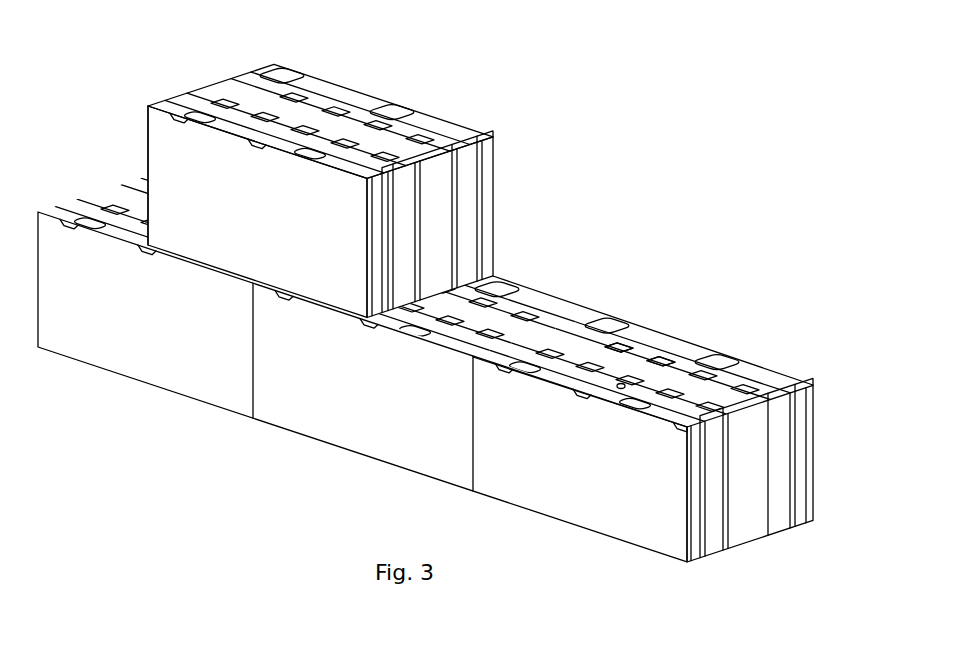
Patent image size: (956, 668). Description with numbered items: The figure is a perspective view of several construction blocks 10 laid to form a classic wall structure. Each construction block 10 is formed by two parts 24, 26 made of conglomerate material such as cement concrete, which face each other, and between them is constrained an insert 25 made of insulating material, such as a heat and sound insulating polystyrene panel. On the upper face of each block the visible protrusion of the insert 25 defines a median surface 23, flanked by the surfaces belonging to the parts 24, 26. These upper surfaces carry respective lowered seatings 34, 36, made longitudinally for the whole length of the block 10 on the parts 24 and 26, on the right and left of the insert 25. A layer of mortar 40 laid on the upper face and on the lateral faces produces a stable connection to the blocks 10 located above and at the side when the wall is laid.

The construction block 10 is at (500, 226).
The median surface 23 is at (233, 94).
The part 24 is at (495, 168).
The insert 25 is at (115, 187).
The part 26 is at (146, 132).
The upper seating 34 is at (739, 377).
The upper seating 36 is at (618, 390).
The layer of mortar 40 is at (640, 337).